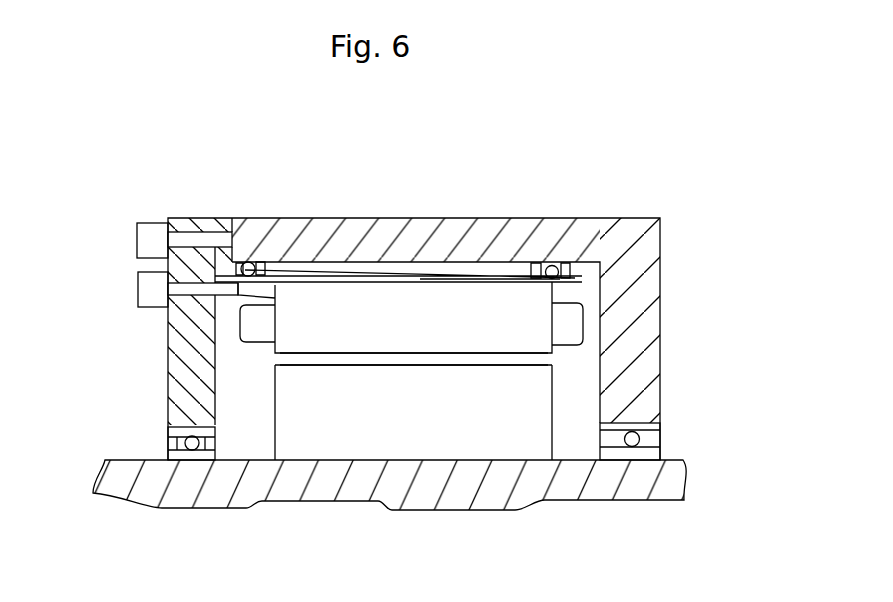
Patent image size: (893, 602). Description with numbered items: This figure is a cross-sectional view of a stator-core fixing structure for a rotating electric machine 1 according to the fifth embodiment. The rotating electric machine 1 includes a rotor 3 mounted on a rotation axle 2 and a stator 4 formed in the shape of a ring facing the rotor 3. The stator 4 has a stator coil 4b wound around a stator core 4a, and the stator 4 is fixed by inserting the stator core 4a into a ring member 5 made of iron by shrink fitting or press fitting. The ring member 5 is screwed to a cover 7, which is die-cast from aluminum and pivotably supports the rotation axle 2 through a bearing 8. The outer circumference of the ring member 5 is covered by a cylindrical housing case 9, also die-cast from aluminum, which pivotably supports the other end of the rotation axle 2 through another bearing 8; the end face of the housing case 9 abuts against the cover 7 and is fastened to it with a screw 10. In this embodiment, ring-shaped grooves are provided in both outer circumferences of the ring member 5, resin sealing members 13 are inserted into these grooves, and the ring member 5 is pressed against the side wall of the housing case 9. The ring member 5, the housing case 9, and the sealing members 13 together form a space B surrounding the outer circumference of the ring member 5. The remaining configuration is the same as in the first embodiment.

The rotating electric machine 1 is at (312, 178).
The rotation axle 2 is at (528, 481).
The rotor 3 is at (345, 430).
The stator 4 is at (317, 298).
The stator core 4a is at (317, 332).
The stator coil 4b is at (252, 332).
The ring member 5 is at (410, 268).
The cover 7 is at (168, 333).
The bearing 8 is at (175, 440).
The housing case 9 is at (655, 317).
The screw 10 is at (152, 238).
The sealing member 13 is at (245, 260).
The space B is at (484, 265).